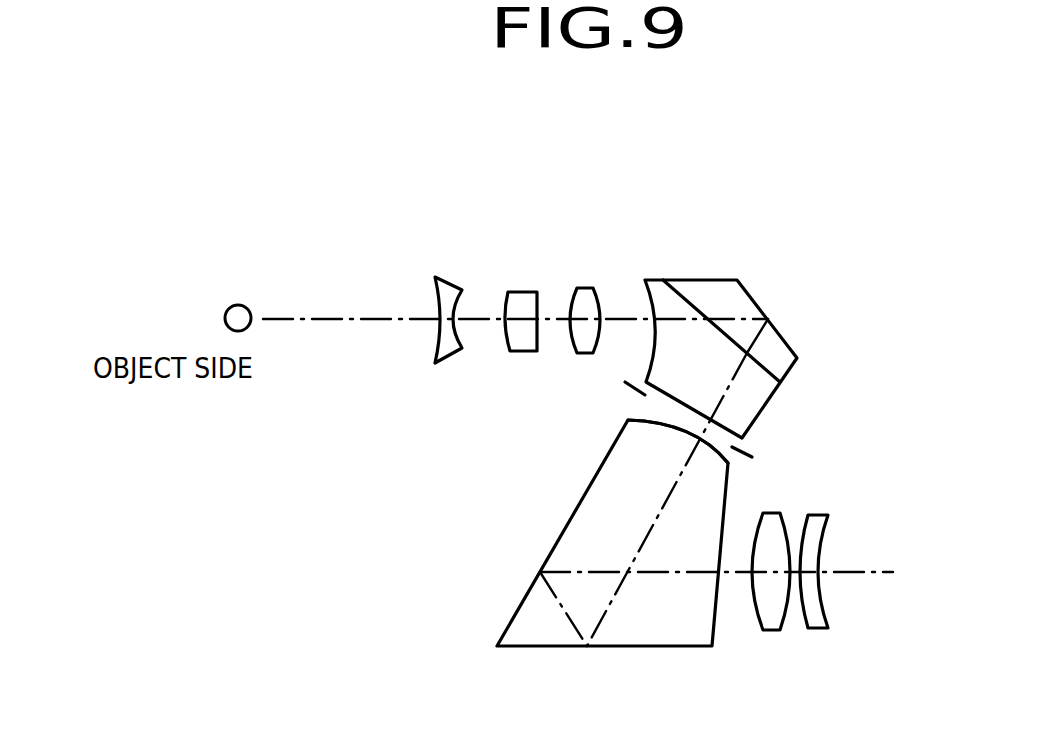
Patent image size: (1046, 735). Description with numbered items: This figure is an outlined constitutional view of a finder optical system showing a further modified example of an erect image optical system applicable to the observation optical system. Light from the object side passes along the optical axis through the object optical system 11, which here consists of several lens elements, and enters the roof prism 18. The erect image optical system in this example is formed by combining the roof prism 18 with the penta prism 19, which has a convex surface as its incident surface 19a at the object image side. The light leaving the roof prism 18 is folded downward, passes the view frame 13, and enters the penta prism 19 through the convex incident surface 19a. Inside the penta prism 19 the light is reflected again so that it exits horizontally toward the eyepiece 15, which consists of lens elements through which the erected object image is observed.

The object optical system 11 is at (600, 268).
The roof prism 18 is at (673, 280).
The penta prism 19 is at (578, 503).
The incident surface 19a is at (652, 420).
The view frame 13 is at (745, 450).
The eyepiece 15 is at (850, 635).